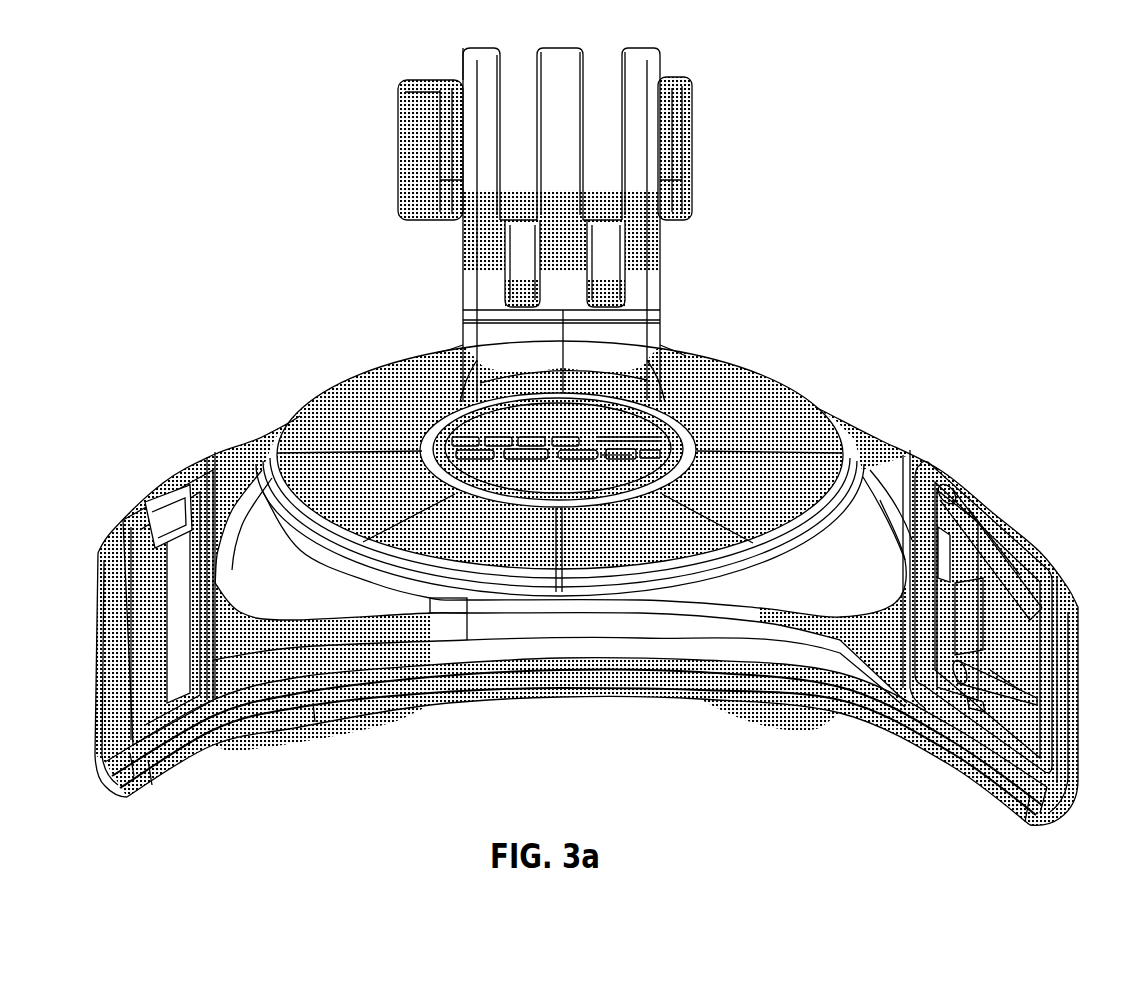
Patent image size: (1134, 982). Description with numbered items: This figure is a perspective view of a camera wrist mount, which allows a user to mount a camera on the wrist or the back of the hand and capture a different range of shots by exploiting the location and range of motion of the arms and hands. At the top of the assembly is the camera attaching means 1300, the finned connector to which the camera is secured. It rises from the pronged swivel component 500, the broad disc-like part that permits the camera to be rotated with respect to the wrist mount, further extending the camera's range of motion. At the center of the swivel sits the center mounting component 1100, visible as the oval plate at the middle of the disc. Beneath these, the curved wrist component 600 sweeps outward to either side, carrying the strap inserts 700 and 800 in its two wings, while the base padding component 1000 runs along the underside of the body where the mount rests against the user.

The camera attaching means 1300 is at (397, 147).
The pronged swivel component 500 is at (757, 400).
The center mounting component 1100 is at (492, 472).
The strap insert 700 is at (163, 513).
The strap insert 800 is at (1012, 538).
The base padding component 1000 is at (667, 700).
The wrist component 600 is at (933, 758).